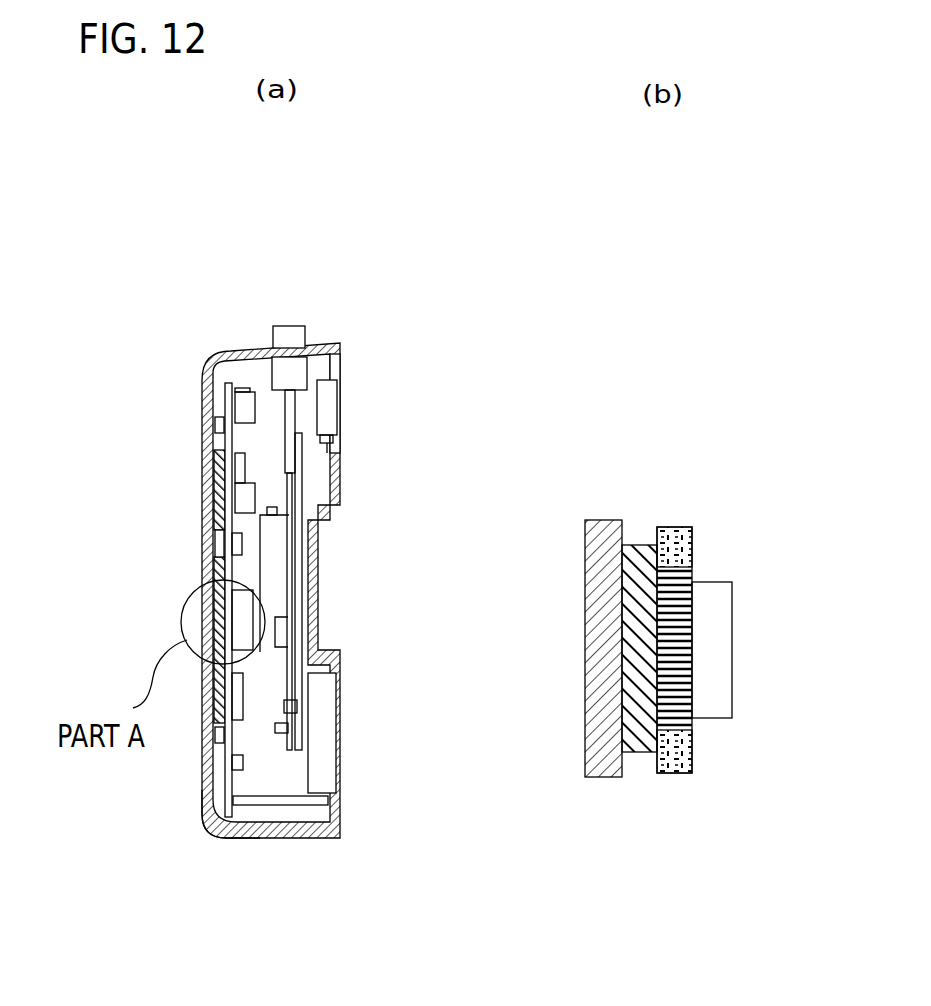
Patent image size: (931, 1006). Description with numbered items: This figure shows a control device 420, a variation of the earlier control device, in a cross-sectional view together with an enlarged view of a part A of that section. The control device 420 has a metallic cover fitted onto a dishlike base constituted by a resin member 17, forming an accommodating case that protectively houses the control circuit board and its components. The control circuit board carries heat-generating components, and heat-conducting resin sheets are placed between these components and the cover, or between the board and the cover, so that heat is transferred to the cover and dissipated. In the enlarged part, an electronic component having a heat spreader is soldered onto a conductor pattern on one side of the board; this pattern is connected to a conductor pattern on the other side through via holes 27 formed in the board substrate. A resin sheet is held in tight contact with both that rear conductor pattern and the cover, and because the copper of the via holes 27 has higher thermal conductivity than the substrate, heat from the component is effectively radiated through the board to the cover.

The resin member 17 is at (227, 836).
The via holes 27 is at (683, 720).
The control device 420 is at (323, 340).